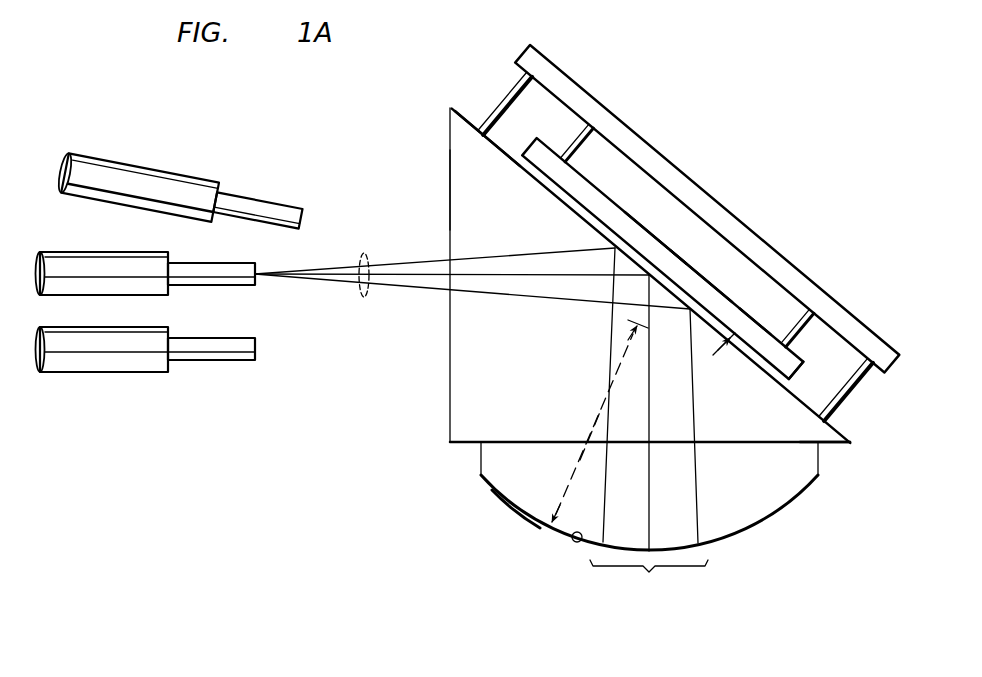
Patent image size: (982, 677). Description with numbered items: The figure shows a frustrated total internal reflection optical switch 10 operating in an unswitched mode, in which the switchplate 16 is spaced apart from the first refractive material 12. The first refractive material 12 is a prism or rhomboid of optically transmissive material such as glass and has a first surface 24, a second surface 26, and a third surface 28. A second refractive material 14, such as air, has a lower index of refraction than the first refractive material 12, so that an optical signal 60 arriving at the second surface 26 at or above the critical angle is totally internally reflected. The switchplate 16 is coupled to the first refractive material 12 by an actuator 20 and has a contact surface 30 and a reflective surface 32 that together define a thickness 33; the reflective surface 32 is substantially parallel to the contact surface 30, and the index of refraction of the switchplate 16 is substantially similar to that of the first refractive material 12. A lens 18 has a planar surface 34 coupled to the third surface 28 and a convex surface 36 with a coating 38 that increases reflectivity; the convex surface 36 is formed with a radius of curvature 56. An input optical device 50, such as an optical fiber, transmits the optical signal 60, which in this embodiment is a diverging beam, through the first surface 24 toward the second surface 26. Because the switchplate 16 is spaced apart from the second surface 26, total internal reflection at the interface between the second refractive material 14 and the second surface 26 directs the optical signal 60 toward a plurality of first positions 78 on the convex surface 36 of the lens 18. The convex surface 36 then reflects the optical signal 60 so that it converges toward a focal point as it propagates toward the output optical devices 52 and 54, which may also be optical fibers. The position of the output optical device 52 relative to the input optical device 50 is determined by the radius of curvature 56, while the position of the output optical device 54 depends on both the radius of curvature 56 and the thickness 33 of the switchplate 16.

The frustrated total internal reflection optical switch 10 is at (296, 116).
The first refractive material 12 is at (520, 414).
The second refractive material 14 is at (518, 156).
The switchplate 16 is at (688, 256).
The lens 18 is at (760, 494).
The actuator 20 is at (673, 164).
The first surface 24 is at (450, 192).
The second surface 26 is at (462, 112).
The third surface 28 is at (828, 448).
The contact surface 30 is at (792, 380).
The reflective surface 32 is at (640, 221).
The thickness 33 is at (750, 312).
The planar surface 34 is at (557, 450).
The convex surface 36 is at (510, 505).
The coating 38 is at (573, 553).
The input optical device 50 is at (235, 287).
The output optical device 52 is at (213, 362).
The output optical device 54 is at (262, 197).
The radius of curvature 56 is at (595, 425).
The optical signal 60 is at (364, 253).
The first positions 78 is at (649, 583).